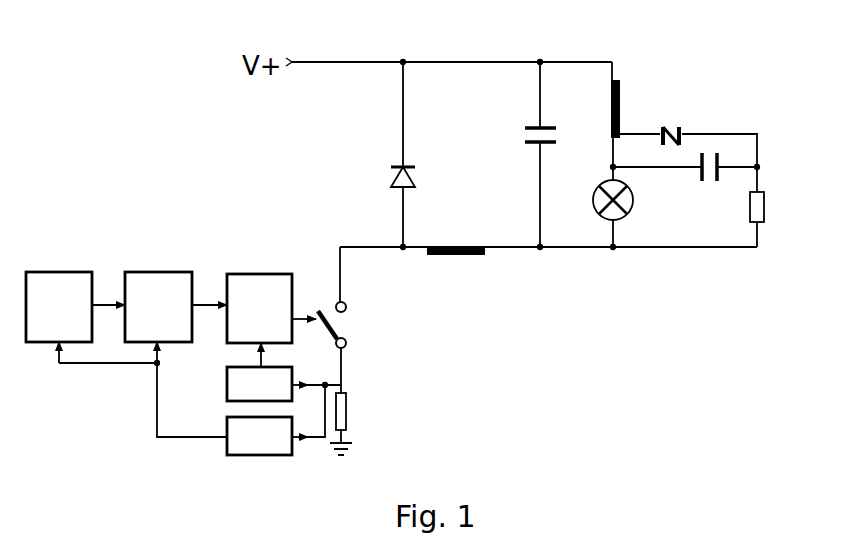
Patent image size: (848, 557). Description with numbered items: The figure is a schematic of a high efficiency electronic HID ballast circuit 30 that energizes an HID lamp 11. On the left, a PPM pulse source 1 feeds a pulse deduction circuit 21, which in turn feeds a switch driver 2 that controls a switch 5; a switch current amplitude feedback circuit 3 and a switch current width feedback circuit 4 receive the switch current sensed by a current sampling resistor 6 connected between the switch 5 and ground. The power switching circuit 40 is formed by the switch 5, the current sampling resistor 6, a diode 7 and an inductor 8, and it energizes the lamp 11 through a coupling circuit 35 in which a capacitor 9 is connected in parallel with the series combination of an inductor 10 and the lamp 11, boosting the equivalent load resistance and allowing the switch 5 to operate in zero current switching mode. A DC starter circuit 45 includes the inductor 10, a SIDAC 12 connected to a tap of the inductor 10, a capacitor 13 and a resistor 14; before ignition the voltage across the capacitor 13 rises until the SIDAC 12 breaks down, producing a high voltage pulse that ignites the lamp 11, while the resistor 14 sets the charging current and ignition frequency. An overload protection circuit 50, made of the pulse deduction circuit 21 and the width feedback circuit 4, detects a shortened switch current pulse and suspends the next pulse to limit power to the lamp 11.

The PPM pulse source 1 is at (65, 270).
The pulse deduction circuit 21 is at (160, 272).
The switch driver 2 is at (260, 272).
The switch current amplitude feedback circuit 3 is at (223, 381).
The switch current width feedback circuit 4 is at (225, 449).
The switch 5 is at (356, 338).
The current sampling resistor 6 is at (352, 408).
The diode 7 is at (392, 185).
The inductor 8 is at (468, 258).
The capacitor 9 is at (530, 146).
The inductor 10 is at (621, 85).
The HID lamp 11 is at (598, 212).
The SIDAC 12 is at (681, 124).
The capacitor 13 is at (700, 181).
The resistor 14 is at (766, 222).
The high efficiency electronic HID ballast circuit 30 is at (482, 362).
The coupling circuit 35 is at (571, 54).
The power switching circuit 40 is at (315, 207).
The DC starter circuit 45 is at (688, 73).
The overload protection circuit 50 is at (112, 371).